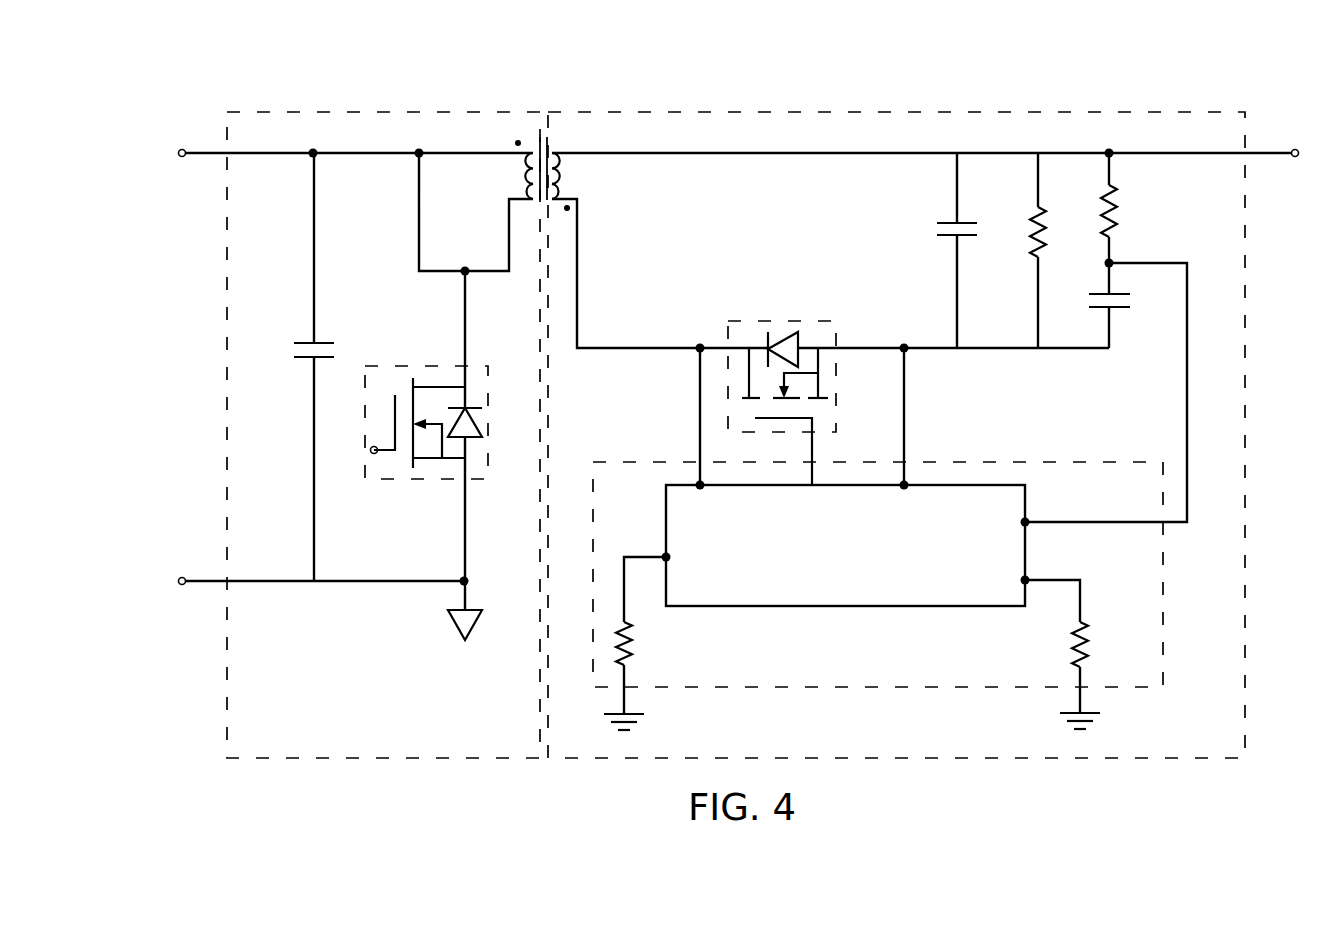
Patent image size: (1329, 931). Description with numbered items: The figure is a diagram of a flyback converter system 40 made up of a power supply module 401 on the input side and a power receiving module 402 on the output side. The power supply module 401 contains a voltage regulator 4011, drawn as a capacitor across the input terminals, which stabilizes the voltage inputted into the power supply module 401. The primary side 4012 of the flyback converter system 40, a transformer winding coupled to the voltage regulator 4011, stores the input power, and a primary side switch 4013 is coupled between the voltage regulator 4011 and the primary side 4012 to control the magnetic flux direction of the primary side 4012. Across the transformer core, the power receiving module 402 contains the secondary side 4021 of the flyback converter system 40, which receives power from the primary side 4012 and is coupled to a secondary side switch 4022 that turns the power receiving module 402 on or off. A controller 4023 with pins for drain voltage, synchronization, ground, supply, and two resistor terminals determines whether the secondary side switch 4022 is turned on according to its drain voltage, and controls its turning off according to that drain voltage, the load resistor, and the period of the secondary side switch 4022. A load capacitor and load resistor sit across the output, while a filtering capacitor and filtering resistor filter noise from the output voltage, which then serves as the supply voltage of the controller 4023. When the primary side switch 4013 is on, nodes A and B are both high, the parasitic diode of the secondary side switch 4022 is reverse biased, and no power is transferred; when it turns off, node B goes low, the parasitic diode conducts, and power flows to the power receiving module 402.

The flyback converter system 40 is at (1156, 74).
The power supply module 401 is at (382, 110).
The power receiving module 402 is at (971, 110).
The voltage regulator 4011 is at (290, 354).
The primary side 4012 is at (514, 184).
The primary side switch 4013 is at (432, 480).
The secondary side 4021 is at (577, 172).
The secondary side switch 4022 is at (793, 320).
The controller 4023 is at (1070, 462).